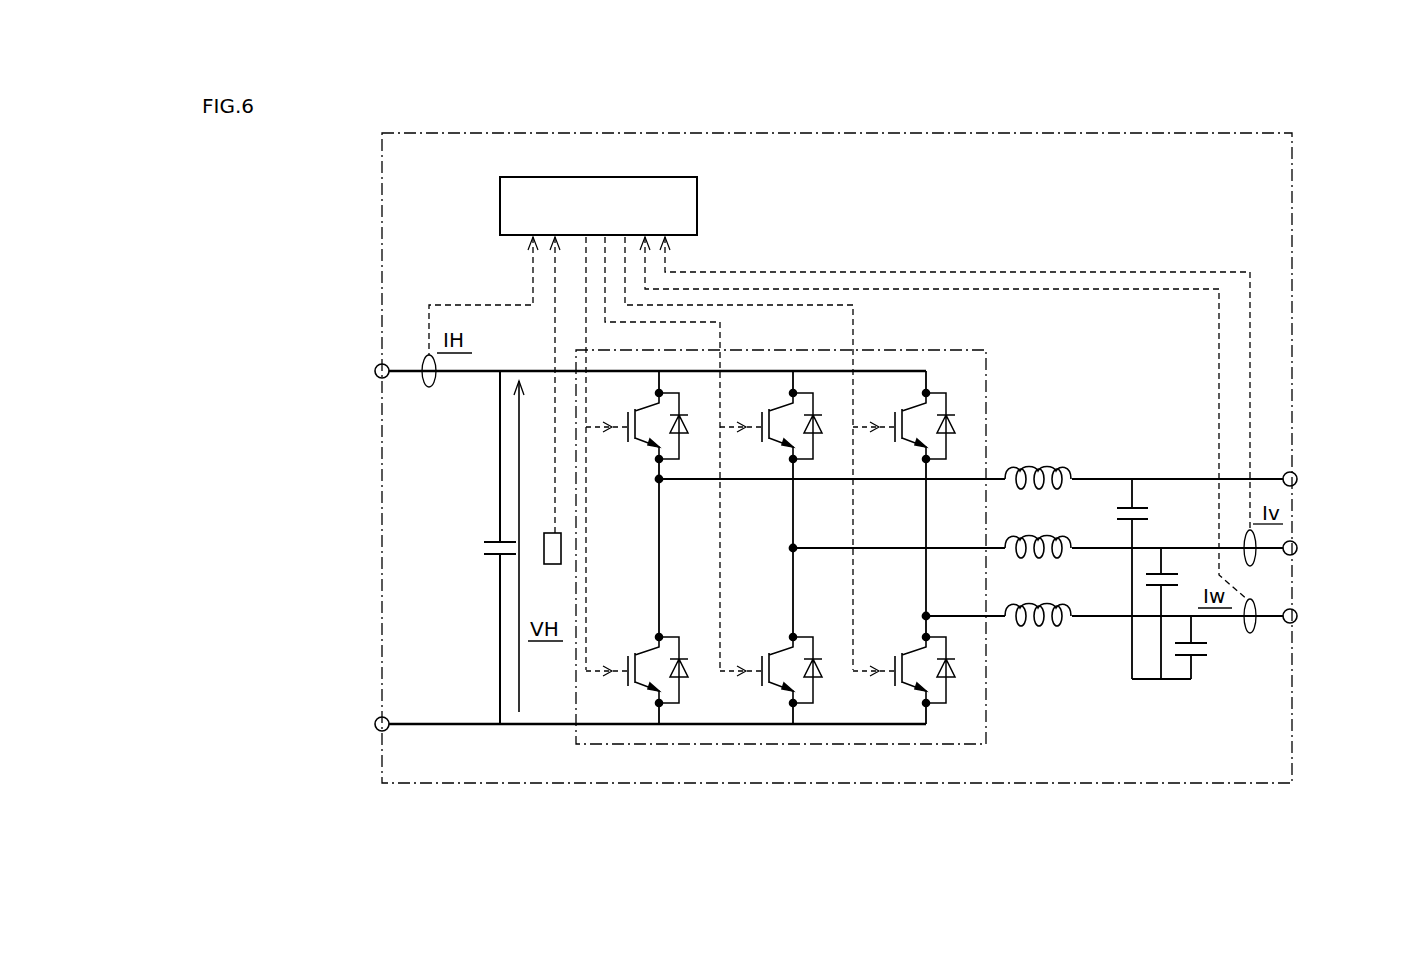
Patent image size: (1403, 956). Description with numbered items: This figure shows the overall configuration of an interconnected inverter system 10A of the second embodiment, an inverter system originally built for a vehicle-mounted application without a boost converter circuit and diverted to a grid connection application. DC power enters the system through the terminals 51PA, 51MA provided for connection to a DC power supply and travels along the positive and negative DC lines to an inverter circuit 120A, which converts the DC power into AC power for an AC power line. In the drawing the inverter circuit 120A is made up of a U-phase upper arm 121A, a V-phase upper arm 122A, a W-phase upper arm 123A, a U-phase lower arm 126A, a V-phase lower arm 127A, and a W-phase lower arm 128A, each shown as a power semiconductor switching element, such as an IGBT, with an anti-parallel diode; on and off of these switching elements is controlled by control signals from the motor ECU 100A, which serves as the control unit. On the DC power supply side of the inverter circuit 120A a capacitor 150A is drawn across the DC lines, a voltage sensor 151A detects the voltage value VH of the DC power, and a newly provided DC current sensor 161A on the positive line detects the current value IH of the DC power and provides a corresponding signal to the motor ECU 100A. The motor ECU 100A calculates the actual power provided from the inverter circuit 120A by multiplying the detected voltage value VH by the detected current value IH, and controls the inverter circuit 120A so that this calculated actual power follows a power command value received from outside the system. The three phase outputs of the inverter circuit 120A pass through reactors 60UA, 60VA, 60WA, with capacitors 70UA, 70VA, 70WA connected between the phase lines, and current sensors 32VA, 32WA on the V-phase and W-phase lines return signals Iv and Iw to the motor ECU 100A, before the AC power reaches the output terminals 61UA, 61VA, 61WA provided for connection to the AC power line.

The interconnected inverter system 10A is at (433, 168).
The motor ECU 100A is at (622, 178).
The inverter circuit 120A is at (927, 745).
The upper arm switching element (U phase) 121A is at (677, 466).
The upper arm switching element (V phase) 122A is at (808, 466).
The upper arm switching element (W phase) 123A is at (940, 466).
The lower arm switching element (U phase) 126A is at (676, 634).
The lower arm switching element (V phase) 127A is at (808, 634).
The lower arm switching element (W phase) 128A is at (940, 632).
The smoothing capacitor 150A is at (490, 541).
The voltage sensor 151A is at (554, 565).
The DC current sensor 161A is at (429, 387).
The terminal 51PA is at (377, 364).
The terminal 51MA is at (377, 730).
The U-phase reactor 60UA is at (1030, 466).
The V-phase reactor 60VA is at (1030, 535).
The W-phase reactor 60WA is at (1030, 603).
The U-phase filter capacitor 70UA is at (1142, 507).
The V-phase filter capacitor 70VA is at (1167, 573).
The W-phase filter capacitor 70WA is at (1197, 660).
The V-phase current sensor 32VA is at (1252, 566).
The W-phase current sensor 32WA is at (1252, 633).
The terminal 61UA is at (1296, 474).
The terminal 61VA is at (1296, 543).
The terminal 61WA is at (1296, 621).